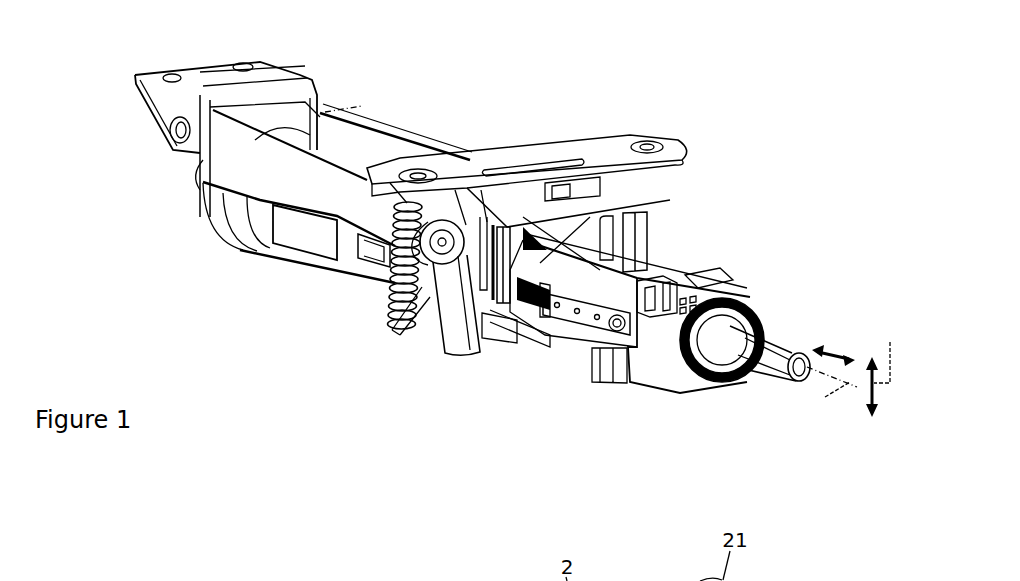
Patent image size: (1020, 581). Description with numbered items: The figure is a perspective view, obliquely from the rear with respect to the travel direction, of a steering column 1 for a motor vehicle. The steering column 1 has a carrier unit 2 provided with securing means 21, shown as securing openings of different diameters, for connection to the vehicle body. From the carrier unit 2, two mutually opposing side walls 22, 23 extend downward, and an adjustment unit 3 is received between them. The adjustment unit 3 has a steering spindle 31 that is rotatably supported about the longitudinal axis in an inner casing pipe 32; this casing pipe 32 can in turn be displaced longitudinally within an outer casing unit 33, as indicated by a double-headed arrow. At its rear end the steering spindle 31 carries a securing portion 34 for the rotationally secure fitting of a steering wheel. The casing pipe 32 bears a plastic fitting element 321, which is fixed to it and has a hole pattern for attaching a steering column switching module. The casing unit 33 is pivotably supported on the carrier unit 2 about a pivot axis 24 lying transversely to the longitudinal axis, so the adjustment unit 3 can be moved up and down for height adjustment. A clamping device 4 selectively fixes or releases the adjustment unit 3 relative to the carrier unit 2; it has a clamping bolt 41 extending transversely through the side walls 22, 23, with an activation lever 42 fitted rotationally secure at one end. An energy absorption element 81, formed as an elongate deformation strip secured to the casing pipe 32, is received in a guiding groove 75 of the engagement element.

The steering column 1 is at (745, 108).
The carrier unit 2 is at (600, 152).
The securing means 21 is at (244, 64).
The side wall 22 is at (495, 328).
The side wall 23 is at (624, 242).
The pivot axis 24 is at (172, 131).
The adjustment unit 3 is at (750, 265).
The steering spindle 31 is at (724, 330).
The casing pipe 32 is at (634, 276).
The fitting element 321 is at (662, 337).
The casing unit 33 is at (293, 229).
The securing portion 34 is at (753, 347).
The clamping device 4 is at (433, 351).
The clamping bolt 41 is at (420, 303).
The activation lever 42 is at (457, 352).
The guiding groove 75 is at (553, 308).
The energy absorption element 81 is at (588, 318).